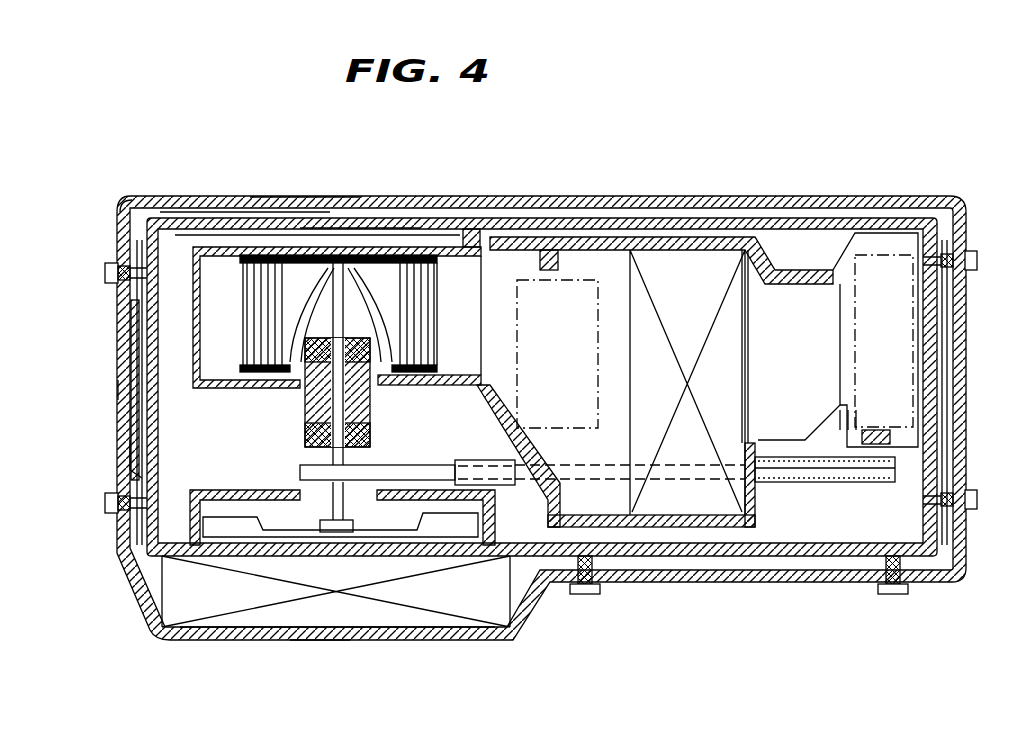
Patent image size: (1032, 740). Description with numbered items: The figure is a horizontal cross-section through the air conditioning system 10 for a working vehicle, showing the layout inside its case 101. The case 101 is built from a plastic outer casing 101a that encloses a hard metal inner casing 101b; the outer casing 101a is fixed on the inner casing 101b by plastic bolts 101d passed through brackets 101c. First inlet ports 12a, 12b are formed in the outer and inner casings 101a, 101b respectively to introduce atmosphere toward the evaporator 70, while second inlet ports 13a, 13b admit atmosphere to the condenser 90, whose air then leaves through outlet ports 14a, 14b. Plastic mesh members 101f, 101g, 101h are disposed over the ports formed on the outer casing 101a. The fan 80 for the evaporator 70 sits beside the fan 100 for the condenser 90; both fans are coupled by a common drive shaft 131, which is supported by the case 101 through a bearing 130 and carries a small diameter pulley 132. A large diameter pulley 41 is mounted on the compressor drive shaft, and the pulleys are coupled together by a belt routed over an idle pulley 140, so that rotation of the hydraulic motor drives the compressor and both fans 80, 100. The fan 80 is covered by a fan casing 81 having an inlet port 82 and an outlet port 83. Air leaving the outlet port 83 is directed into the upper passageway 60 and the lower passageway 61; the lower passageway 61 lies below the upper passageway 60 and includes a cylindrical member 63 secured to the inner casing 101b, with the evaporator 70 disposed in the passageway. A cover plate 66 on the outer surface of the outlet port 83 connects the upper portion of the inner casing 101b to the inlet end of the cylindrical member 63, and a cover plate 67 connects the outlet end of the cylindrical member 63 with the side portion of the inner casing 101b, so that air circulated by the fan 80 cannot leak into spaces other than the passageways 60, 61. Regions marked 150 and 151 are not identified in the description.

The air conditioning system 10 is at (865, 597).
The first inlet port 12a is at (238, 197).
The first inlet port 12b is at (357, 222).
The second inlet port 13a is at (115, 460).
The second inlet port 13b is at (152, 423).
The outlet port 14a is at (212, 643).
The outlet port 14b is at (223, 557).
The large diameter pulley 41 is at (823, 465).
The upper passageway 60 is at (510, 270).
The lower passageway 61 is at (610, 268).
The cylindrical member 63 is at (687, 528).
The cover plate 66 is at (478, 407).
The cover plate 67 is at (826, 268).
The evaporator 70 is at (670, 423).
The fan 80 is at (245, 343).
The fan casing 81 is at (188, 250).
The inlet port 82 is at (418, 248).
The outlet port 83 is at (480, 310).
The condenser 90 is at (473, 603).
The fan 100 is at (190, 550).
The case 101 is at (112, 495).
The outer casing 101a is at (957, 343).
The inner casing 101b is at (930, 412).
The bracket 101c is at (115, 230).
The bolt 101d is at (105, 272).
The mesh member 101f is at (303, 197).
The mesh member 101g is at (117, 393).
The mesh member 101h is at (317, 642).
The bearing 130 is at (302, 422).
The drive shaft 131 is at (368, 408).
The small diameter pulley 132 is at (293, 455).
The idle pulley 140 is at (462, 457).
The first cartridge 150 is at (564, 307).
The second cartridge 151 is at (877, 318).